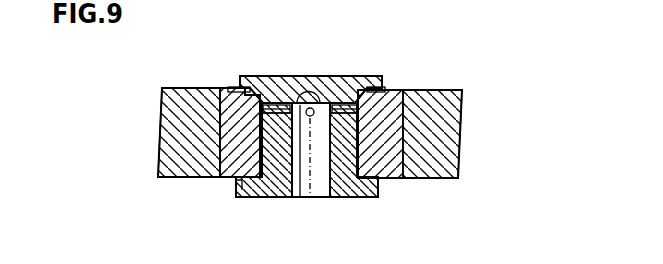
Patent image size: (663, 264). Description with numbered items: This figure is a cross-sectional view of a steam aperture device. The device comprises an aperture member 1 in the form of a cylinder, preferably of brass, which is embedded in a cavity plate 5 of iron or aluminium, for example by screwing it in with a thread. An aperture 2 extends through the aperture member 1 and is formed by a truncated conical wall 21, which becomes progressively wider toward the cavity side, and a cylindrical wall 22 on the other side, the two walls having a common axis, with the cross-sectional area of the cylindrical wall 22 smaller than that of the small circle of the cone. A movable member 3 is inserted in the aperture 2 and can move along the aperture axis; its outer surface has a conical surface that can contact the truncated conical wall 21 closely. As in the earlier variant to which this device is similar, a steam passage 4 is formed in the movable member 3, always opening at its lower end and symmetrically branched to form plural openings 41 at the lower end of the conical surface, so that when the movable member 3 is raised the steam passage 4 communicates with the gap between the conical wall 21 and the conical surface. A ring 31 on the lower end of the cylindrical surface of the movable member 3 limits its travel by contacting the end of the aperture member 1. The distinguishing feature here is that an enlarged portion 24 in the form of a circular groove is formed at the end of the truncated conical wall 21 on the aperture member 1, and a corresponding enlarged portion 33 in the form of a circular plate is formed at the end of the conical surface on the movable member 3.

The aperture member 1 is at (380, 160).
The aperture 2 is at (387, 92).
The movable member 3 is at (290, 75).
The steam passage 4 is at (305, 183).
The cavity plate 5 is at (433, 162).
The truncated conical wall 21 is at (245, 118).
The cylindrical wall 22 is at (240, 170).
The enlarged portion 24 is at (232, 88).
The ring 31 is at (240, 193).
The enlarged portion 33 is at (241, 77).
The openings 41 is at (275, 107).